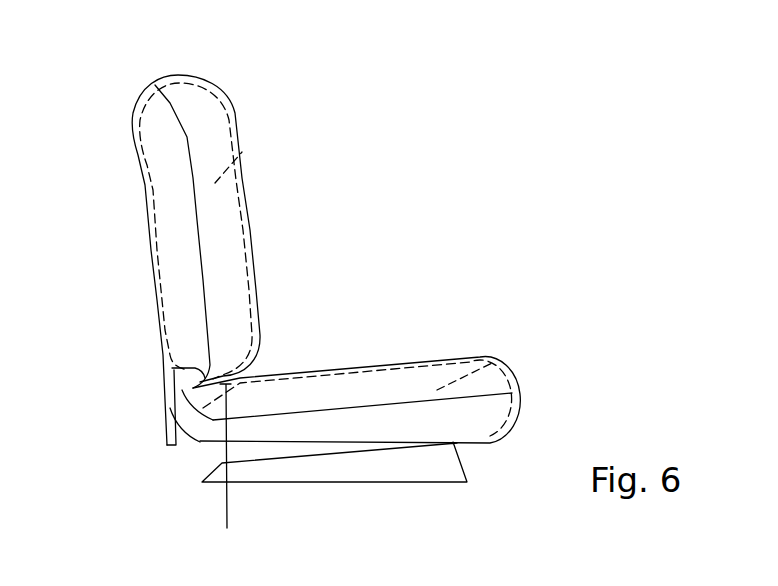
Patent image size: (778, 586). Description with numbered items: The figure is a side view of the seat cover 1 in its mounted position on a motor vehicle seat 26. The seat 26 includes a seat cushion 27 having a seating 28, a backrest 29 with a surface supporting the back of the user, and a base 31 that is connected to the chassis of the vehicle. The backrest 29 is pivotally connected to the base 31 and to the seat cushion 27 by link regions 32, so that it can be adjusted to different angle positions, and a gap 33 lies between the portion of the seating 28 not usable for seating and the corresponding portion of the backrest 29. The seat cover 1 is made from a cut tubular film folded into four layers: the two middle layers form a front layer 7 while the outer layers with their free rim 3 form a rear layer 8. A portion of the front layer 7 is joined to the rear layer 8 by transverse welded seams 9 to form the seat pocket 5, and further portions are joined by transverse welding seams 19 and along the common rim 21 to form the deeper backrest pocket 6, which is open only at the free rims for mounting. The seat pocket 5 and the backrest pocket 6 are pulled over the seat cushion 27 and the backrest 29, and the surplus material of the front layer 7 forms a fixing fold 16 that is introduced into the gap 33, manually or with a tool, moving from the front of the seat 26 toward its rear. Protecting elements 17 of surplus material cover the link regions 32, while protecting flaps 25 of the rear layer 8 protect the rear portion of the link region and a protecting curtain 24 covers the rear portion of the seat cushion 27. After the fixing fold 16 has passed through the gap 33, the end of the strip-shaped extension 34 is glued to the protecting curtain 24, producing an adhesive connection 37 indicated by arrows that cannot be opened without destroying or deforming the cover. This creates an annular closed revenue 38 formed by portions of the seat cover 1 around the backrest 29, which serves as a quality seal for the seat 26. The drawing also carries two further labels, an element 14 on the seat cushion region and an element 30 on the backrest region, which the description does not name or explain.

The seat cover 1 is at (181, 52).
The free rim 3 is at (168, 442).
The seat pocket 5 is at (408, 350).
The backrest pocket 6 is at (237, 105).
The front layer 7 is at (212, 117).
The rear layer 8 is at (170, 190).
The transverse welded seams 9 is at (392, 404).
The seat pan 14 is at (512, 393).
The fixing fold 16 is at (230, 384).
The protecting elements 17 is at (189, 418).
The transverse welding seams 19 is at (197, 212).
The common rim 21 is at (160, 92).
The protecting curtain 24 is at (170, 390).
The protecting flaps 25 is at (173, 452).
The motor vehicle seat 26 is at (351, 497).
The seat cushion 27 is at (497, 363).
The seating 28 is at (448, 363).
The backrest 29 is at (243, 157).
The backrest rear wall 30 is at (243, 182).
The base 31 is at (440, 463).
The link regions 32 is at (175, 400).
The gap 33 is at (263, 356).
The strip-shaped extension 34 is at (177, 390).
The adhesive connection 37 is at (152, 371).
The annular closed revenue 38 is at (248, 278).